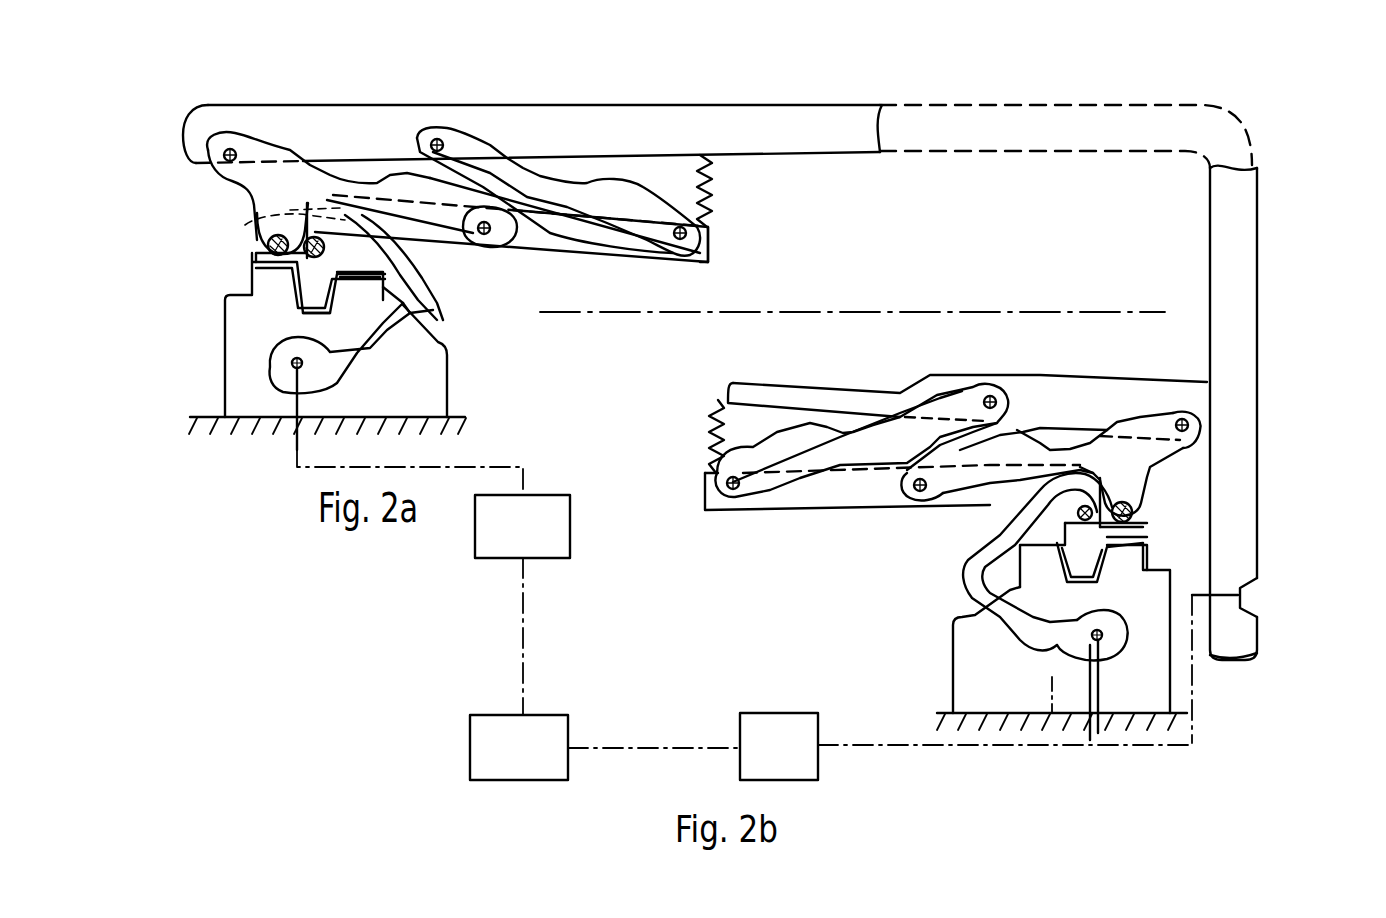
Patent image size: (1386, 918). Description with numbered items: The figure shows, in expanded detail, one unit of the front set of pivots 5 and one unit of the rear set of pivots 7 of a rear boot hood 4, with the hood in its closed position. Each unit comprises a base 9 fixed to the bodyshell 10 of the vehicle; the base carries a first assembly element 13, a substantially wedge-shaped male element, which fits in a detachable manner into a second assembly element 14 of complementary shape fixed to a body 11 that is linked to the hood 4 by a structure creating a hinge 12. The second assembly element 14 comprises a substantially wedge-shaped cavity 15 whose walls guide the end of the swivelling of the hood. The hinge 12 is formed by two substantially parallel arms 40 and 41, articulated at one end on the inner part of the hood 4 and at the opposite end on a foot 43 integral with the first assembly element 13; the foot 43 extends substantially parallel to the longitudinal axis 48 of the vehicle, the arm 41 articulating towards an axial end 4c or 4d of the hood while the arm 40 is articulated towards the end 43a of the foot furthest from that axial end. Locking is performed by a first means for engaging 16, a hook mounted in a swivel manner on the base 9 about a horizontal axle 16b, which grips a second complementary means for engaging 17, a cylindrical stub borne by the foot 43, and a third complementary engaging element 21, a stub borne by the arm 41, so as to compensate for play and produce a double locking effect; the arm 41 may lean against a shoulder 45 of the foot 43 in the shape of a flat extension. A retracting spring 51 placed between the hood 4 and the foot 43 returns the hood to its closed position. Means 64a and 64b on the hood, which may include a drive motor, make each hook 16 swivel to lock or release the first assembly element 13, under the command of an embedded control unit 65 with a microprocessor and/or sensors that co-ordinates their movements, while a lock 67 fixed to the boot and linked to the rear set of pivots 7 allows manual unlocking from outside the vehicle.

In FIG. 2B, the hood 4 is at (1318, 327).
In FIG. 2A, the axial end of the hood 4c is at (277, 120).
In FIG. 2B, the axial end of the hood 4d is at (1252, 637).
In FIG. 2A, the front set of pivots 5 is at (704, 279).
In FIG. 2B, the rear set of pivots 7 is at (973, 366).
In FIG. 2A, the base 9 is at (440, 383).
In FIG. 2B, the base 9 is at (970, 652).
In FIG. 2A, the bodyshell 10 is at (457, 428).
In FIG. 2B, the bodyshell 10 is at (953, 712).
In FIG. 2A, the body 11 is at (555, 258).
In FIG. 2B, the body 11 is at (766, 512).
In FIG. 2A, the hinge 12 is at (609, 233).
In FIG. 2B, the hinge 12 is at (823, 418).
In FIG. 2A, the first assembly element 13 is at (330, 292).
In FIG. 2B, the first assembly element 13 is at (1090, 540).
In FIG. 2A, the second assembly element 14 is at (295, 312).
In FIG. 2B, the second assembly element 14 is at (1110, 582).
In FIG. 2B, the cavity 15 is at (1090, 552).
In FIG. 2A, the first means for engaging 16 is at (437, 309).
In FIG. 2B, the first means for engaging 16 is at (983, 564).
In FIG. 2A, the axle 16b is at (292, 363).
In FIG. 2B, the axle 16b is at (1090, 637).
In FIG. 2A, the second complementary means for engaging 17 is at (385, 256).
In FIG. 2A, the third complementary engaging element 21 is at (263, 240).
In FIG. 2B, the third complementary engaging element 21 is at (1017, 534).
In FIG. 2A, the arm 40 is at (643, 197).
In FIG. 2B, the arm 40 is at (851, 445).
In FIG. 2A, the arm 41 is at (513, 244).
In FIG. 2B, the arm 41 is at (1067, 380).
In FIG. 2A, the foot 43 is at (645, 258).
In FIG. 2B, the foot 43 is at (832, 489).
In FIG. 2A, the end of the foot 43a is at (712, 250).
In FIG. 2B, the end of the foot 43a is at (703, 495).
In FIG. 2A, the shoulder 45 is at (255, 265).
In FIG. 2B, the shoulder 45 is at (1125, 503).
In FIG. 2B, the longitudinal axis 48 is at (1110, 311).
In FIG. 2A, the retracting spring 51 is at (715, 197).
In FIG. 2B, the retracting spring 51 is at (710, 438).
In FIG. 2A, the means for swivelling the hook 64a is at (558, 516).
In FIG. 2B, the means for swivelling the hook 64b is at (778, 730).
In FIG. 2A, the control unit 65 is at (552, 723).
In FIG. 2B, the lock 67 is at (1252, 599).